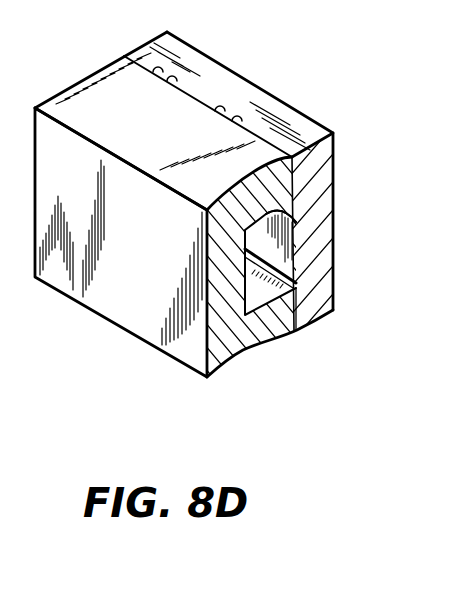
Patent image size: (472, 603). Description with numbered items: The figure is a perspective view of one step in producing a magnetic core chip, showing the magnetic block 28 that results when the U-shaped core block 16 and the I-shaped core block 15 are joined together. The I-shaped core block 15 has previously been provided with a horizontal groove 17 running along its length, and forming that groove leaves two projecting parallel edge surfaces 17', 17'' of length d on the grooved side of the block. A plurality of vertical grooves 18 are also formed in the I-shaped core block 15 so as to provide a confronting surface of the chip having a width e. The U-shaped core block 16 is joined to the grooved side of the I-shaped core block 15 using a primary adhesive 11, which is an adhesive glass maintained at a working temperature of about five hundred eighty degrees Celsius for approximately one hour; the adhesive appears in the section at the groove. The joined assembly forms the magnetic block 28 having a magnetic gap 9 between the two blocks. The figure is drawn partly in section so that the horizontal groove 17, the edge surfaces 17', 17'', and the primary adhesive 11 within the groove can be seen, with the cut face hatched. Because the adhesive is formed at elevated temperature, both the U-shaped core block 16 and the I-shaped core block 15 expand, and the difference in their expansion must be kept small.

The magnetic gap 9 is at (198, 95).
The primary adhesive 11 is at (283, 203).
The I-shaped core block 15 is at (155, 44).
The U-shaped core block 16 is at (92, 97).
The horizontal groove 17 is at (323, 250).
The projecting parallel edge surface 17' is at (347, 154).
The projecting parallel edge surface 17'' is at (353, 289).
The vertical grooves 18 is at (178, 56).
The magnetic block 28 is at (117, 337).